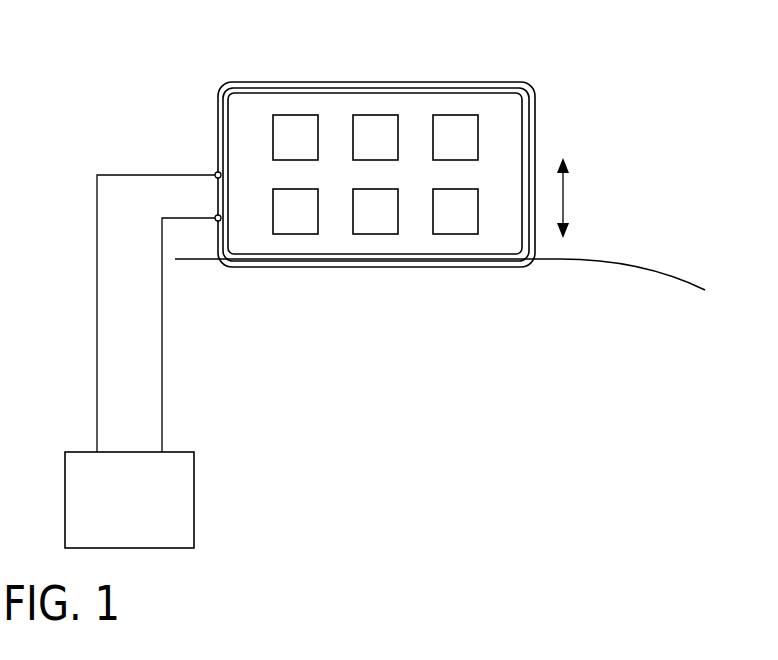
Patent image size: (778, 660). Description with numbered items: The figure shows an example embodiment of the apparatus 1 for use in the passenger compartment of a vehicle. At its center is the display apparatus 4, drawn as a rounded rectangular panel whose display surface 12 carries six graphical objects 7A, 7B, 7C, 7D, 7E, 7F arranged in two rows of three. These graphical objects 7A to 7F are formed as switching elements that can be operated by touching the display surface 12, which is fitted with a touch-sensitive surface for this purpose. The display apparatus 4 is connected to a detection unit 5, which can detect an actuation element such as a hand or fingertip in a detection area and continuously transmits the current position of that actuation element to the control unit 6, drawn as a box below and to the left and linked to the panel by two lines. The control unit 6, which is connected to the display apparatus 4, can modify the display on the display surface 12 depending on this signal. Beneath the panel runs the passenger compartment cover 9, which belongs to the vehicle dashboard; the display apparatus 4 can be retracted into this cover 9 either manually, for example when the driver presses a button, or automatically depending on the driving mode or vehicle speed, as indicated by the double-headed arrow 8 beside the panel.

The apparatus 1 is at (533, 355).
The display apparatus 4 is at (498, 93).
The detection unit 5 is at (422, 82).
The control unit 6 is at (121, 508).
The graphical object 7A is at (312, 150).
The graphical object 7B is at (392, 150).
The graphical object 7C is at (472, 150).
The graphical object 7D is at (312, 224).
The graphical object 7E is at (392, 224).
The graphical object 7F is at (472, 224).
The arrow 8 is at (563, 197).
The passenger compartment cover 9 is at (673, 274).
The display surface 12 is at (505, 132).